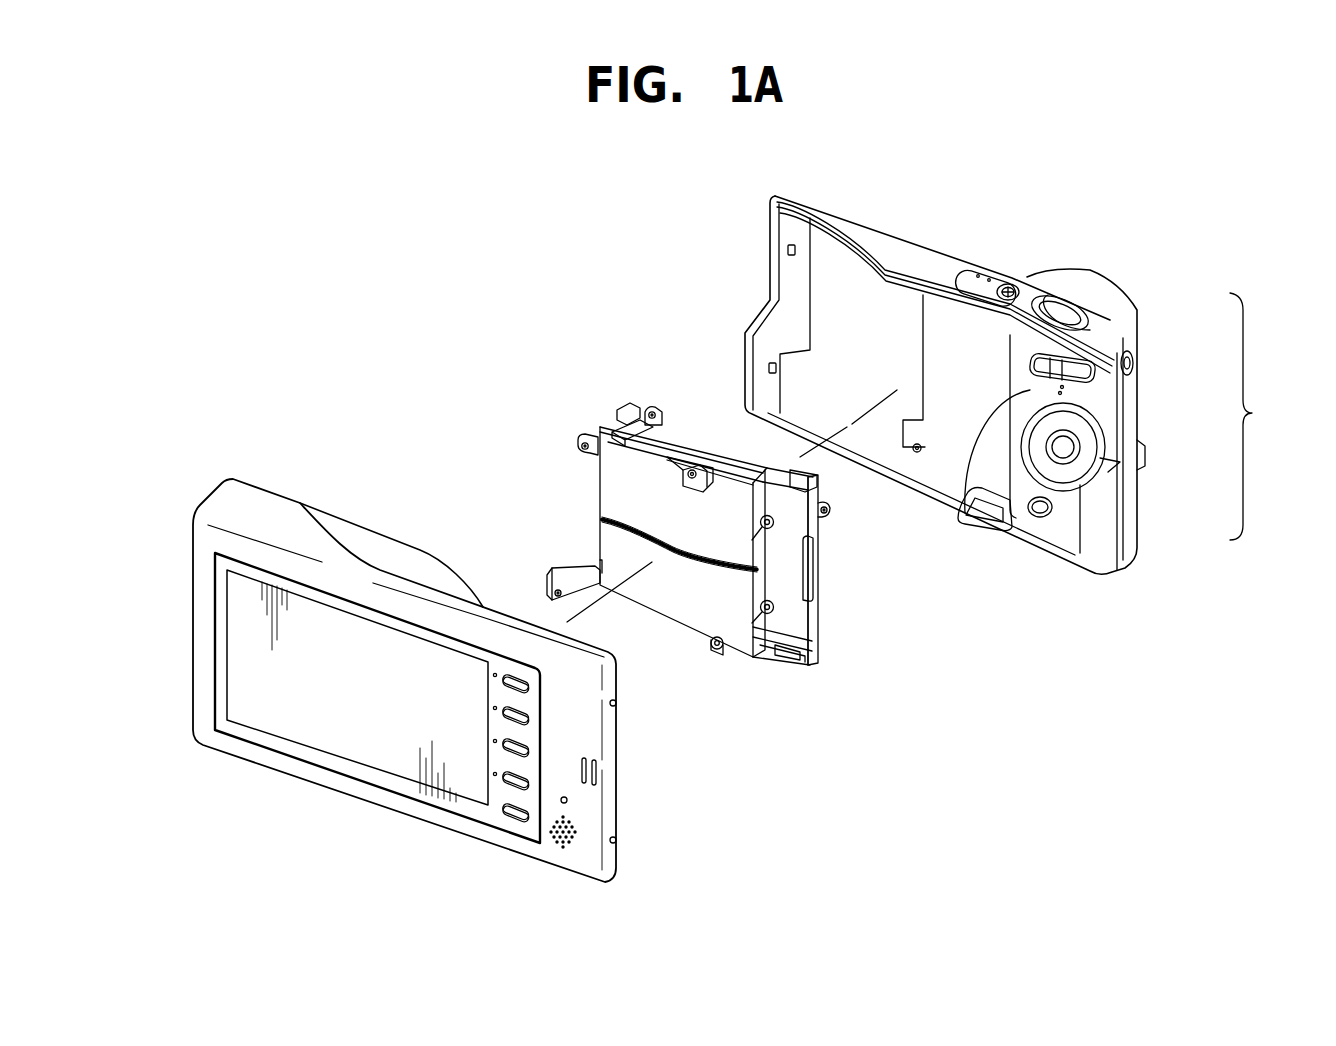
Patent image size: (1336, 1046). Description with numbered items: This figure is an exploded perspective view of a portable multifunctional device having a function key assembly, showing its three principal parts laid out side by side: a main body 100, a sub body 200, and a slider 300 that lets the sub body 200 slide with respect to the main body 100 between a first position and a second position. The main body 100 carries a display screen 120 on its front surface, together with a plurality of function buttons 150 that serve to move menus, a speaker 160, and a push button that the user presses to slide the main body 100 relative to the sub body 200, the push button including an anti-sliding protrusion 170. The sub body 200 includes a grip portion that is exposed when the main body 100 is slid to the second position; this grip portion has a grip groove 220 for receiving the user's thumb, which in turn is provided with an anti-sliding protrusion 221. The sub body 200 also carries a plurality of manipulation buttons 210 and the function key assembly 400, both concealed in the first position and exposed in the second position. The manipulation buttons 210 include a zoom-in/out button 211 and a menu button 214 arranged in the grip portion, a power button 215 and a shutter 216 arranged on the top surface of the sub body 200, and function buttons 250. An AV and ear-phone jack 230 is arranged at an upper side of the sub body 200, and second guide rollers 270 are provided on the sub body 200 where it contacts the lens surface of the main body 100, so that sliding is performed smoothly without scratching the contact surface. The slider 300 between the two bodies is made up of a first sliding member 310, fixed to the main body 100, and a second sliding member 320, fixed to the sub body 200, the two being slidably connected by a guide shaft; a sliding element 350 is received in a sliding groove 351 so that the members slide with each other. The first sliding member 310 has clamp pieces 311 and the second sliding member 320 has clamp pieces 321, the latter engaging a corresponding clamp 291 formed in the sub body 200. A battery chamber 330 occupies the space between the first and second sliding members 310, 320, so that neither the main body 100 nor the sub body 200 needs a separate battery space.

The main body 100 is at (222, 756).
The display screen 120 is at (350, 730).
The function buttons 150 is at (528, 689).
The speaker 160 is at (577, 841).
The anti-sliding protrusion 170 is at (596, 773).
The sub body 200 is at (1034, 252).
The manipulation buttons 210 is at (1261, 416).
The zoom-in/out button 211 is at (1093, 383).
The menu button 214 is at (1055, 512).
The power button 215 is at (1097, 312).
The shutter 216 is at (1080, 315).
The grip groove 220 is at (983, 527).
The anti-sliding protrusion 221 is at (1012, 406).
The AV and ear-phone jack 230 is at (1135, 364).
The function buttons 250 is at (977, 273).
The second guide rollers 270 is at (769, 368).
The clamp 291 is at (917, 453).
The slider 300 is at (605, 397).
The first sliding member 310 is at (737, 653).
The clamp pieces 311 is at (578, 445).
The second sliding member 320 is at (700, 430).
The clamp pieces 321 is at (826, 515).
The battery chamber 330 is at (773, 638).
The sliding element 350 is at (800, 472).
The sliding groove 351 is at (745, 545).
The function key assembly 400 is at (1088, 480).